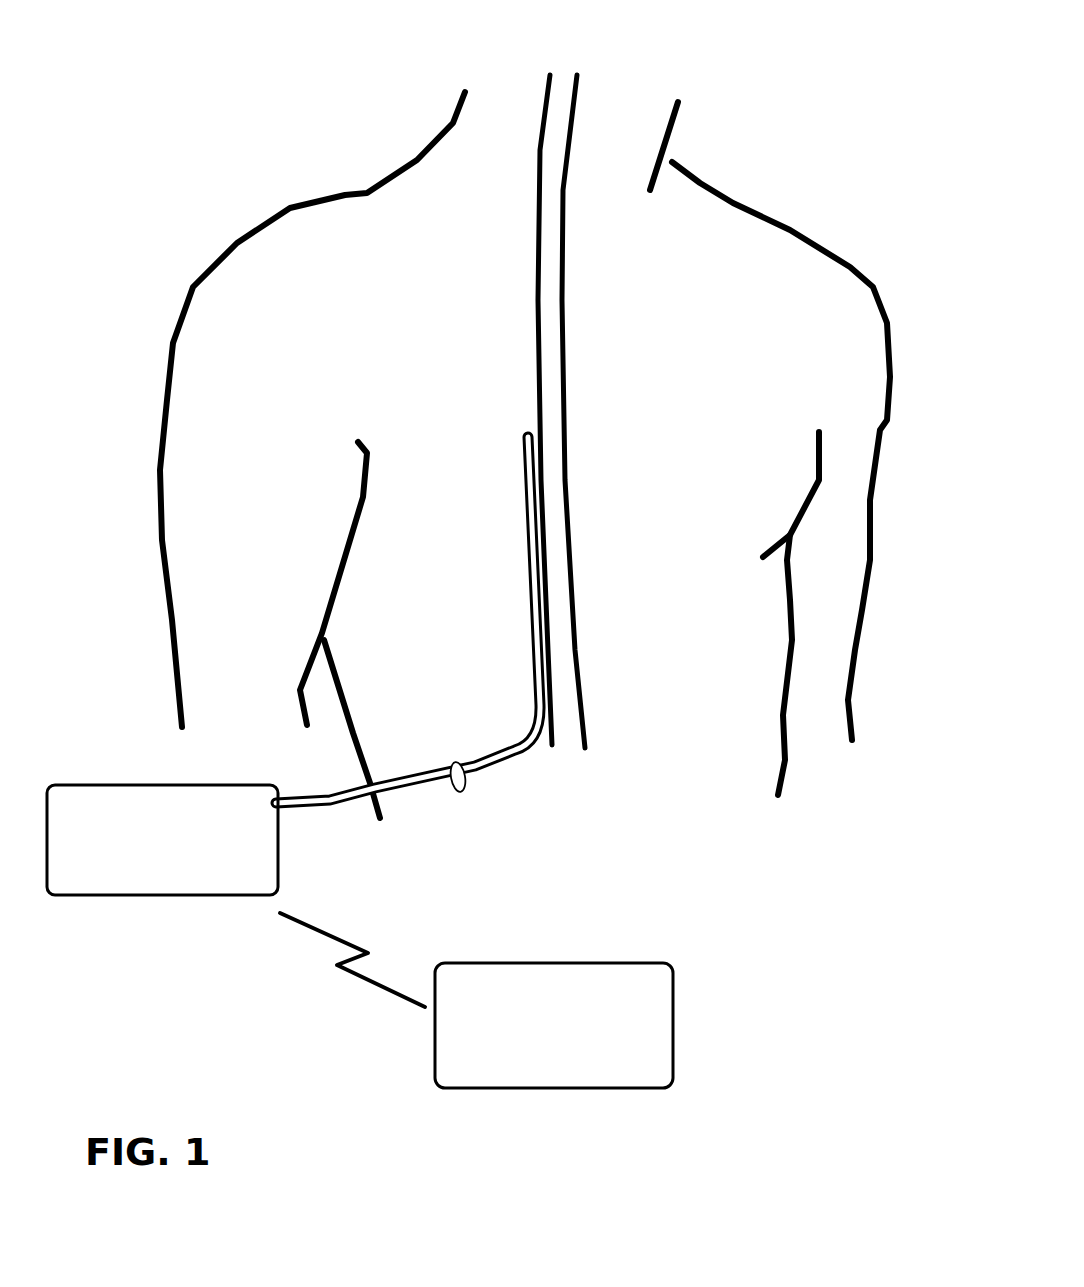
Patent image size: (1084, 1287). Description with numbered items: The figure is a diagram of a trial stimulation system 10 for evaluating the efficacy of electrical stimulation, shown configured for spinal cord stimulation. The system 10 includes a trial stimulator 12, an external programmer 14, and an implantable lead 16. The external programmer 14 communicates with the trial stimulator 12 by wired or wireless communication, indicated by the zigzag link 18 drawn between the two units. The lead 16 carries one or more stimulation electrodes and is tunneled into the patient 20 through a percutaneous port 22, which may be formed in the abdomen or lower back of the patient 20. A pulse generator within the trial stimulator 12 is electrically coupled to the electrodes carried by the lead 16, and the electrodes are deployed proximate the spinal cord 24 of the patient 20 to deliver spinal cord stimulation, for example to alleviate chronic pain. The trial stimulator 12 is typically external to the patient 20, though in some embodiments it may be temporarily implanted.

The trial stimulation system 10 is at (855, 963).
The trial stimulator 12 is at (163, 897).
The external programmer 14 is at (555, 963).
The implantable lead 16 is at (527, 513).
The communication link 18 is at (332, 963).
The patient 20 is at (345, 193).
The percutaneous port 22 is at (452, 762).
The spinal cord 24 is at (568, 405).